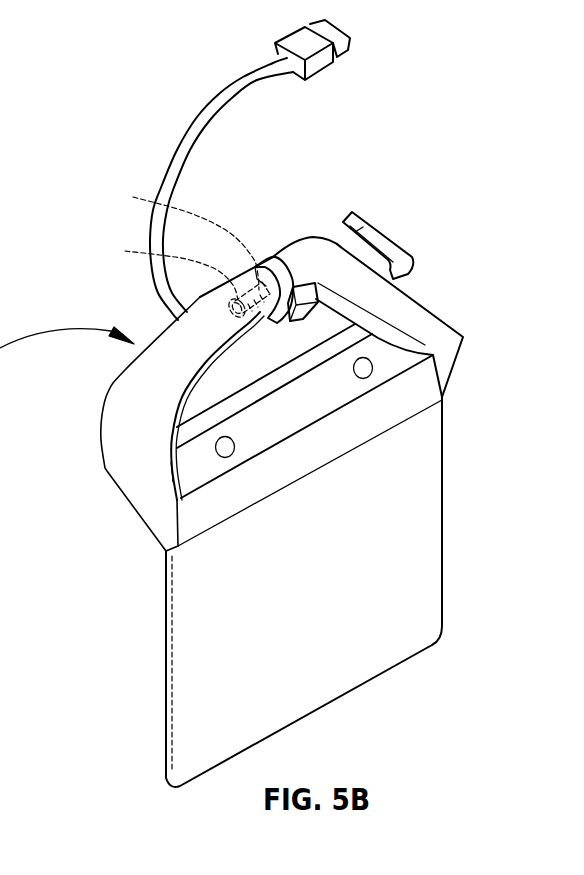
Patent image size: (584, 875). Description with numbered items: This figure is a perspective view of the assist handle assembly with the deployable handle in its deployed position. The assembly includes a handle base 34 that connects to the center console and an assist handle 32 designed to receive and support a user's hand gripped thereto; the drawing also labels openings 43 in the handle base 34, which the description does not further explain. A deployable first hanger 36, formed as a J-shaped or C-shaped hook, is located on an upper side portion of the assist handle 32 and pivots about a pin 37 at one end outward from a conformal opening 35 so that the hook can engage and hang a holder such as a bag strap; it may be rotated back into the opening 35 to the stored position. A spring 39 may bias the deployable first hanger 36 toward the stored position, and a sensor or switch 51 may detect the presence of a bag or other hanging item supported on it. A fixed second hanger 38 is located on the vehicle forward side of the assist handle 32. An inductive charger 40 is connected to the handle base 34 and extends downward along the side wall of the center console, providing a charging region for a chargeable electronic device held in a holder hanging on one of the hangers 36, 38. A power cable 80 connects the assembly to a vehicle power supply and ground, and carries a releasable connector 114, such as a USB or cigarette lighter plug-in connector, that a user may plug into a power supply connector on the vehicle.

The assist handle 32 is at (143, 388).
The handle base 34 is at (307, 390).
The opening 35 is at (275, 257).
The deployable first hanger 36 is at (312, 285).
The pin 37 is at (183, 236).
The fixed second hanger 38 is at (390, 239).
The spring 39 is at (168, 270).
The inductive charger 40 is at (417, 565).
The holes 43 is at (225, 437).
The sensor or switch 51 is at (232, 314).
The power cable 80 is at (193, 128).
The releasable connector 114 is at (297, 40).